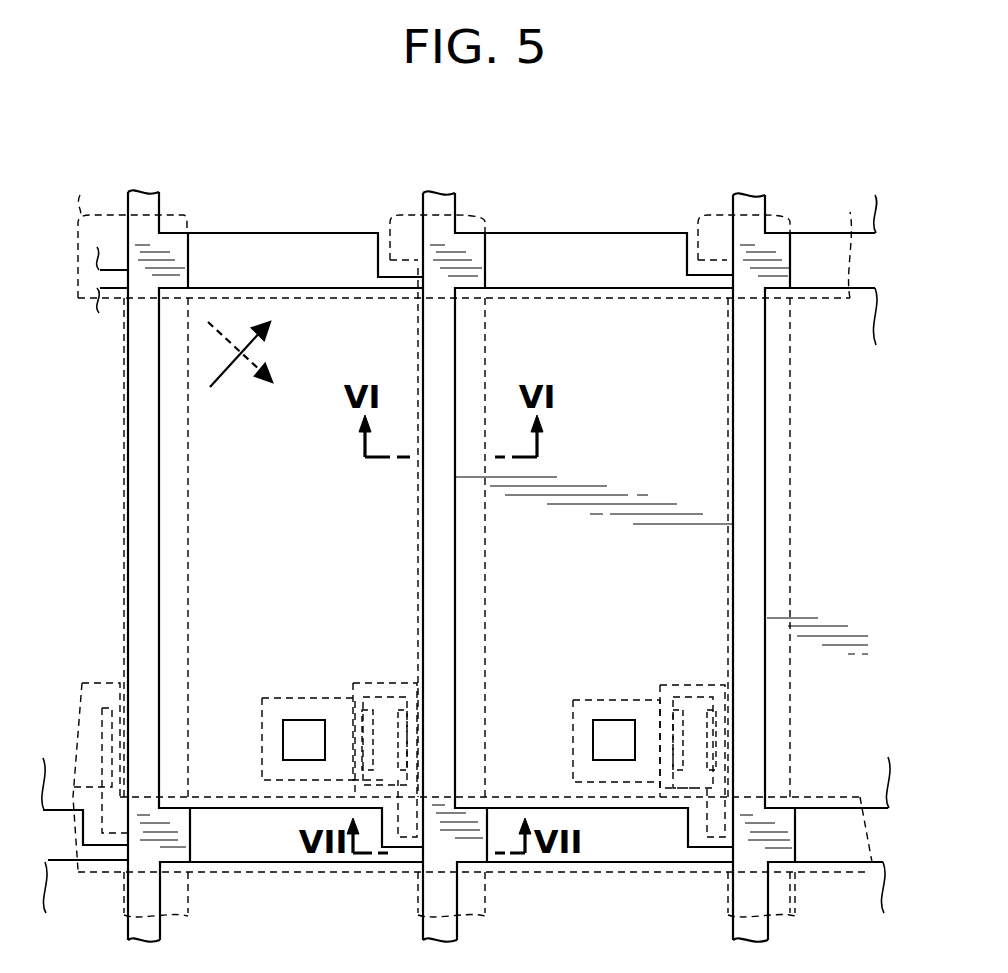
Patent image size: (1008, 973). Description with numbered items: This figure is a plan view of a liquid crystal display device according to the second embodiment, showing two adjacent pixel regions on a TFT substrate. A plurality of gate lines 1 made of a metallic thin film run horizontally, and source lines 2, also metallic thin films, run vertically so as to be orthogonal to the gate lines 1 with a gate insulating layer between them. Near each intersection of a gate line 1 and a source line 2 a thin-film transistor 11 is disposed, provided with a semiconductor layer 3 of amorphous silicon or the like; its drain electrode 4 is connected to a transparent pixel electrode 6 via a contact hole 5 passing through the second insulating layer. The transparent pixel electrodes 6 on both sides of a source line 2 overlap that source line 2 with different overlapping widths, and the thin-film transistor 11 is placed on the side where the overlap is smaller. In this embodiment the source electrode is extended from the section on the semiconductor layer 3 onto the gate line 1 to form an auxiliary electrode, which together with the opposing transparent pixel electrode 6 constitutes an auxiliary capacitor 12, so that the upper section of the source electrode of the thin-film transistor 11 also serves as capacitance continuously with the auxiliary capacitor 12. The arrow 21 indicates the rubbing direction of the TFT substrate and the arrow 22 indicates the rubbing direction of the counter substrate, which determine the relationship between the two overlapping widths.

The gate line 1 is at (358, 265).
The source line 2 is at (177, 257).
The semiconductor layer 3 is at (398, 837).
The drain electrode 4 is at (272, 768).
The contact hole 5 is at (290, 742).
The transparent pixel electrode 6 is at (305, 317).
The thin-film transistor 11 is at (380, 698).
The auxiliary capacitor 12 is at (417, 820).
The arrow 21 is at (246, 356).
The arrow 22 is at (218, 378).